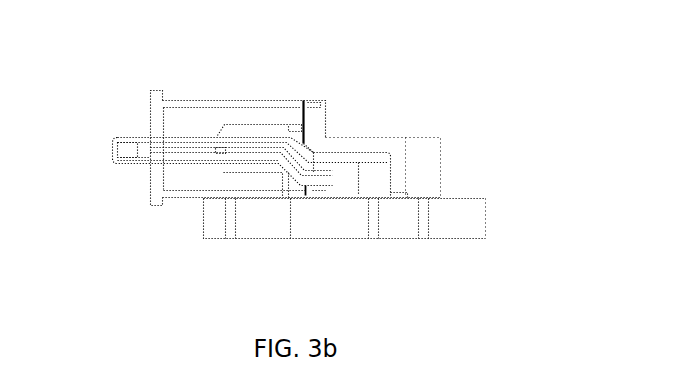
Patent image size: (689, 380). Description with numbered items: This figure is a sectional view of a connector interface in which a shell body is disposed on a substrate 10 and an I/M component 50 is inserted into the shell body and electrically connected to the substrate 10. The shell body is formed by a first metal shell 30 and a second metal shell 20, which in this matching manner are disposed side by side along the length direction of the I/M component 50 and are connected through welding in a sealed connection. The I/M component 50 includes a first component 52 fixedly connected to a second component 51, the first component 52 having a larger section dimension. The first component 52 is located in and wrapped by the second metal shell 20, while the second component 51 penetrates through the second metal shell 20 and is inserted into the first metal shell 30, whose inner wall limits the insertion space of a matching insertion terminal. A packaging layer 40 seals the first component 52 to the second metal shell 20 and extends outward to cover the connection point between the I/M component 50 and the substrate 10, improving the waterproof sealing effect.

The substrate 10 is at (457, 232).
The second metal shell 20 is at (303, 99).
The first metal shell 30 is at (203, 98).
The packaging layer 40 is at (316, 125).
The I/M component 50 is at (135, 170).
The second component 51 is at (185, 150).
The first component 52 is at (295, 178).